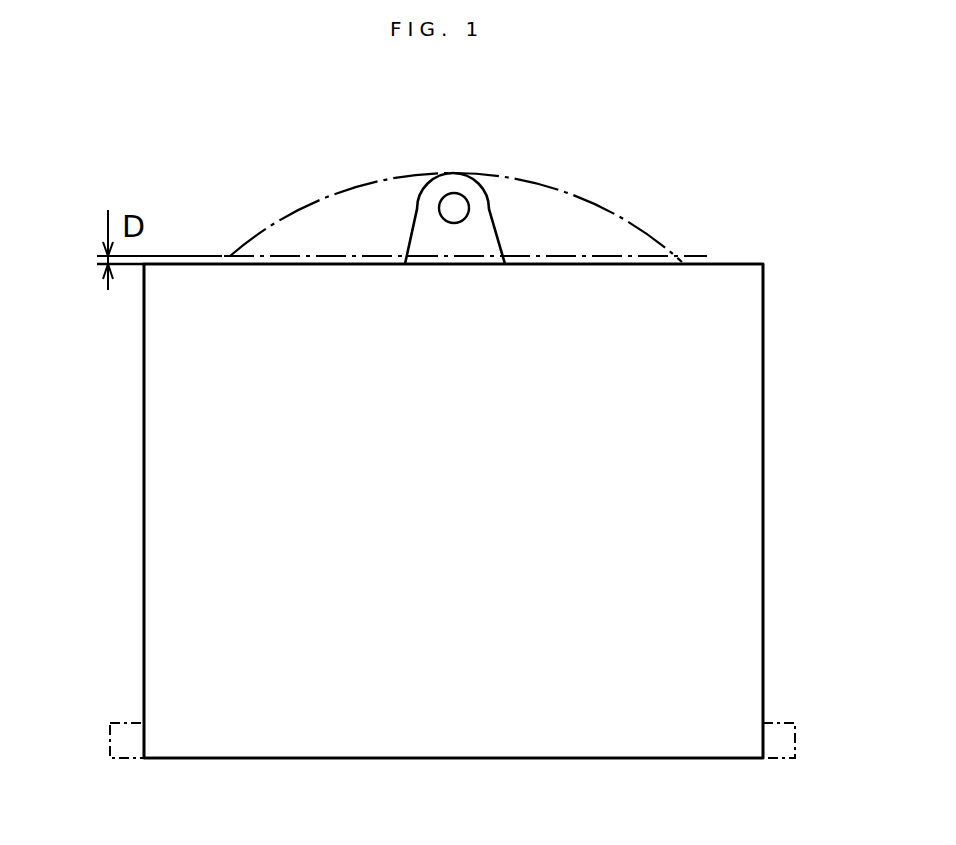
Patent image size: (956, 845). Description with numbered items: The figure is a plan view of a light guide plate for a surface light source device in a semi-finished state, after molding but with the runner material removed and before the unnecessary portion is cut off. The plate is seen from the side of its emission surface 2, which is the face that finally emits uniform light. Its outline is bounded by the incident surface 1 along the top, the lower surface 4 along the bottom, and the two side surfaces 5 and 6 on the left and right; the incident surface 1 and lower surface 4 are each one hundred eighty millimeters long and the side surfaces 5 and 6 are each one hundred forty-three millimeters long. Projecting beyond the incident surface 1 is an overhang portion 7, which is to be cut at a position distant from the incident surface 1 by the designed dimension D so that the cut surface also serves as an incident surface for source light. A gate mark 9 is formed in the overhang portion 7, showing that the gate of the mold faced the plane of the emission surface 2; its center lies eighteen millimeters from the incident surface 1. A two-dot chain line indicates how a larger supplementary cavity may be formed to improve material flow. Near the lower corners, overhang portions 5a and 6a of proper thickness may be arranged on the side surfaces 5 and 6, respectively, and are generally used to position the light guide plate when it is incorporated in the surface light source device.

The incident surface 1 is at (737, 260).
The emission surface 2 is at (172, 623).
The lower surface 4 is at (511, 763).
The side surface 5 is at (143, 493).
The overhang portion 5a is at (110, 742).
The side surface 6 is at (767, 440).
The overhang portion 6a is at (788, 740).
The overhang portion 7 is at (488, 202).
The gate mark 9 is at (467, 170).